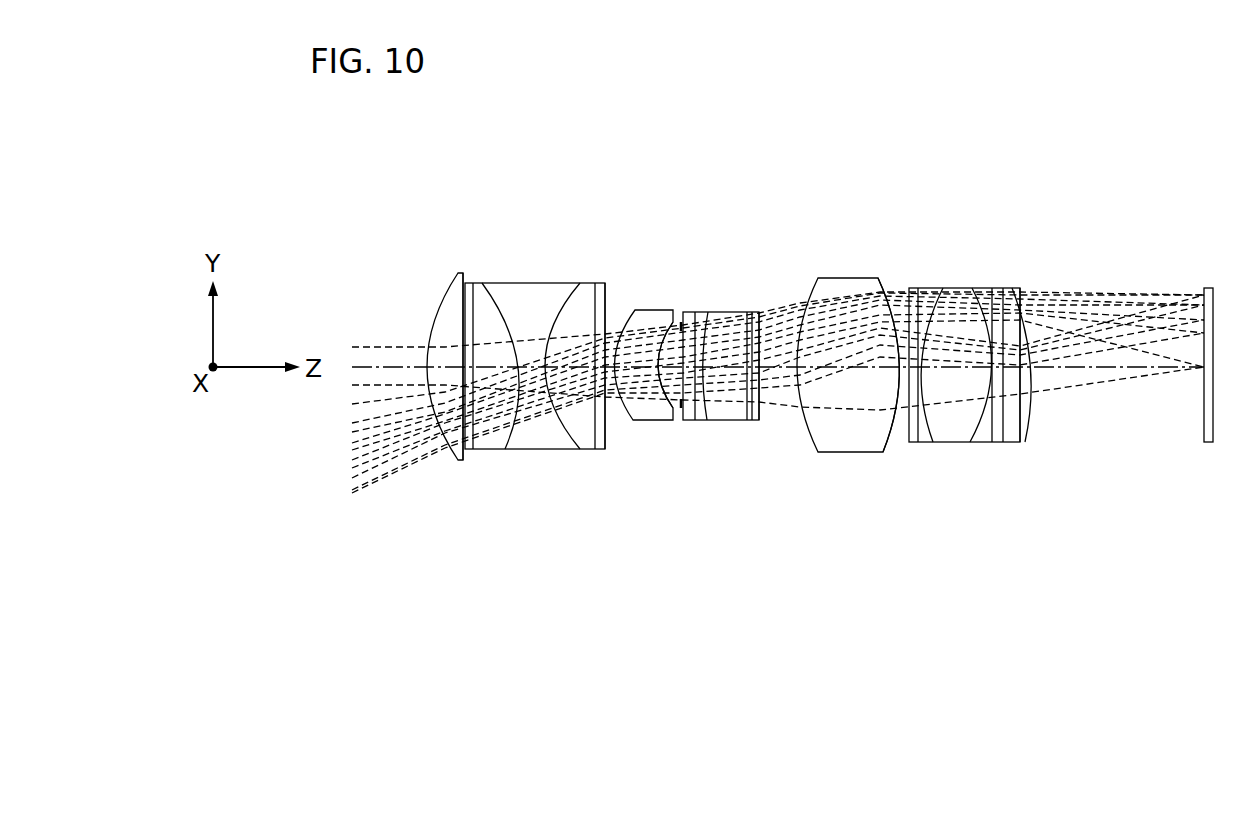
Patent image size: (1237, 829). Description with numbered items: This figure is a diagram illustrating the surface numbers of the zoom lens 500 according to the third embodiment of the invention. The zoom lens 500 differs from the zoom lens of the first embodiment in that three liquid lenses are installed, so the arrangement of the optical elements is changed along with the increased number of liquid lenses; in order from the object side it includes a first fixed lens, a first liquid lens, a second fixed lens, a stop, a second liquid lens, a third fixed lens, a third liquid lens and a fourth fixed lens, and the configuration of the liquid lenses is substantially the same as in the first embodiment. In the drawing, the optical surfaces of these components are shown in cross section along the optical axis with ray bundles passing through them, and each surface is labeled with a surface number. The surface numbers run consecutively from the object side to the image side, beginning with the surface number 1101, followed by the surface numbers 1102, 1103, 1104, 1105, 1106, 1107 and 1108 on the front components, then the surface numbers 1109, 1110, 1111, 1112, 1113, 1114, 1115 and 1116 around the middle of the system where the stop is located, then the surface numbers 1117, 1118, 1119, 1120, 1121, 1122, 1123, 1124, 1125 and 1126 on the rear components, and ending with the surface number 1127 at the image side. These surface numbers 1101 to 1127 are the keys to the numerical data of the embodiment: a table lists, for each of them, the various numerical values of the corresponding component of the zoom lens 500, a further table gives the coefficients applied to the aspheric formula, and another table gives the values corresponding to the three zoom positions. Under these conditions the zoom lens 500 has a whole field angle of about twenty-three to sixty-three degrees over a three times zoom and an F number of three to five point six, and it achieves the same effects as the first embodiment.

The zoom lens 500 is at (889, 150).
The surface number 1101 is at (440, 308).
The surface number 1102 is at (448, 302).
The surface number 1103 is at (475, 315).
The surface number 1104 is at (477, 444).
The surface number 1105 is at (506, 444).
The surface number 1106 is at (572, 446).
The surface number 1107 is at (573, 317).
The surface number 1108 is at (603, 298).
The surface number 1109 is at (630, 421).
The surface number 1110 is at (668, 410).
The surface number 1111 is at (670, 320).
The surface number 1112 is at (695, 421).
The surface number 1113 is at (704, 312).
The surface number 1114 is at (737, 421).
The surface number 1115 is at (744, 312).
The surface number 1116 is at (760, 405).
The surface number 1117 is at (808, 298).
The surface number 1118 is at (888, 432).
The surface number 1119 is at (910, 432).
The surface number 1120 is at (920, 440).
The surface number 1121 is at (930, 332).
The surface number 1122 is at (990, 320).
The surface number 1123 is at (985, 437).
The surface number 1124 is at (1018, 440).
The surface number 1125 is at (1027, 323).
The surface number 1126 is at (1027, 408).
The surface number 1127 is at (1204, 407).